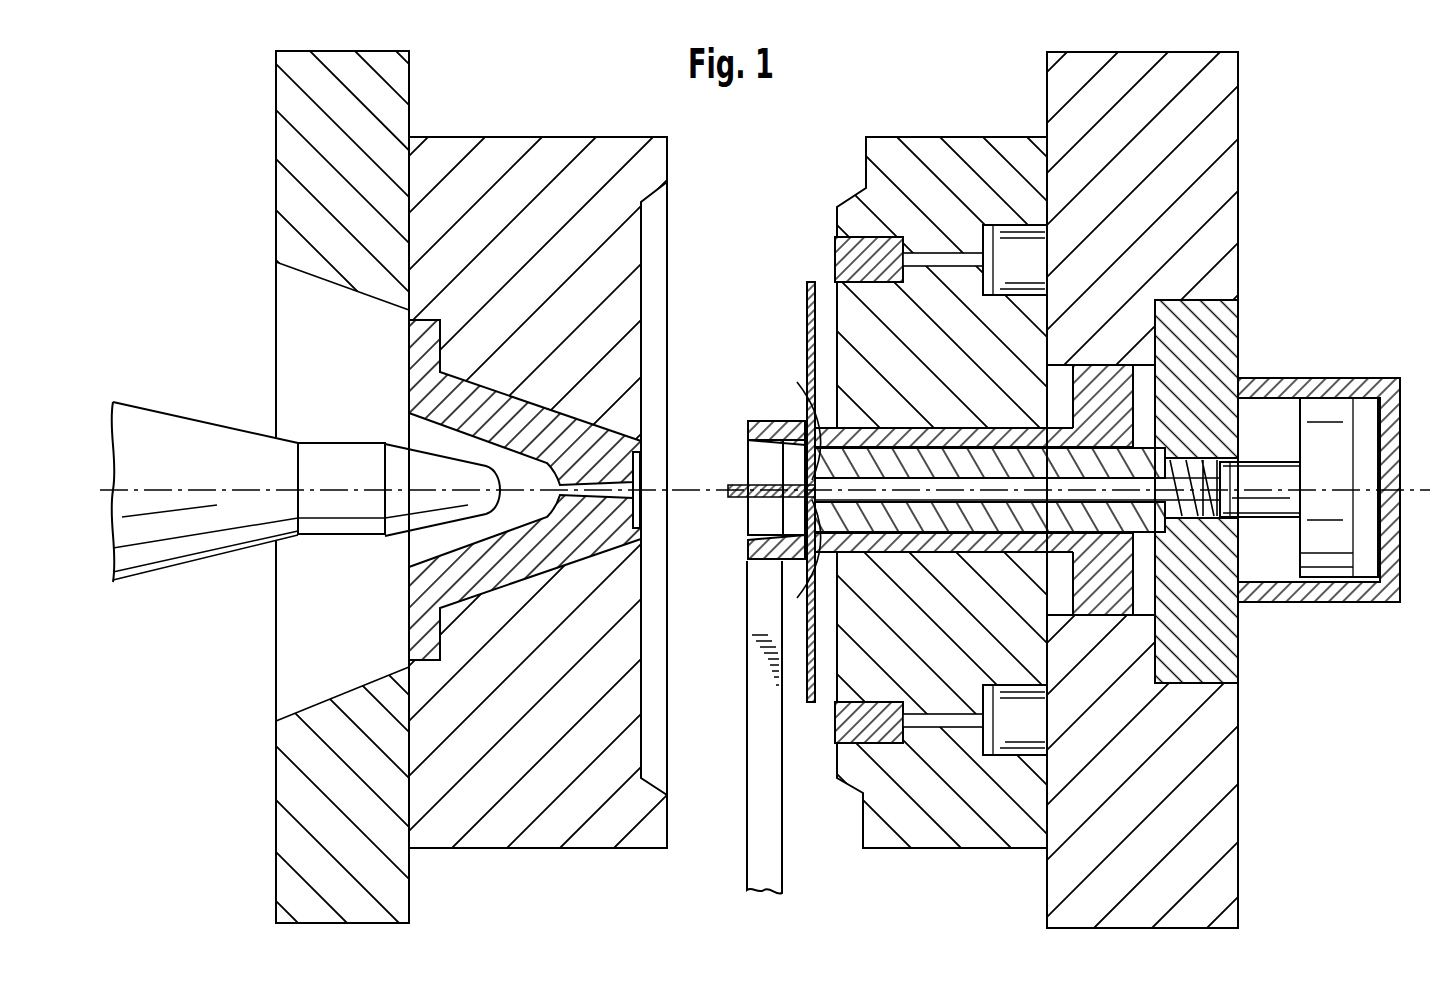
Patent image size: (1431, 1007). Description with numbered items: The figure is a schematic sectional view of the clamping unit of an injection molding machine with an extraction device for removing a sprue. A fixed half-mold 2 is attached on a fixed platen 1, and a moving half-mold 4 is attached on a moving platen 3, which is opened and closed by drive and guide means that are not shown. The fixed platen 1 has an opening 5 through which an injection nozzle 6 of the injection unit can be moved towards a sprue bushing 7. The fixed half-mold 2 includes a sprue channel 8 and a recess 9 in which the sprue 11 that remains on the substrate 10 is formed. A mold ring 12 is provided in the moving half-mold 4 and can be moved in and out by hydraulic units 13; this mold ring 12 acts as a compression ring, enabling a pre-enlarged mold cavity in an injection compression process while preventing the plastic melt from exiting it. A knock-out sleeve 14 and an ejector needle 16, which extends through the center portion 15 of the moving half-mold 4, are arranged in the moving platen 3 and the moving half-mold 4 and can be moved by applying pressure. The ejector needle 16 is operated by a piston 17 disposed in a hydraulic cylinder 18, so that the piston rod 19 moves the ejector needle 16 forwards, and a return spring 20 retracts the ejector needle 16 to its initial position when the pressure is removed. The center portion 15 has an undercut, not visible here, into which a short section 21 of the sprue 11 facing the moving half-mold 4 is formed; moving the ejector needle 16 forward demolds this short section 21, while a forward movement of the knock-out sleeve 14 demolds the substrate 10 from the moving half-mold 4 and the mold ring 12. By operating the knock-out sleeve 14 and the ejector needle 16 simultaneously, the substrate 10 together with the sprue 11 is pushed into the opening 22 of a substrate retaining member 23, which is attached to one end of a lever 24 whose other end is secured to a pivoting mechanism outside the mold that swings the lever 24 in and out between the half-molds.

The fixed platen 1 is at (289, 89).
The fixed half-mold 2 is at (487, 160).
The moving platen 3 is at (1241, 104).
The moving half-mold 4 is at (893, 157).
The opening 5 is at (309, 669).
The injection nozzle 6 is at (157, 425).
The sprue bushing 7 is at (422, 589).
The sprue channel 8 is at (618, 455).
The recess 9 is at (640, 522).
The substrate 10 is at (806, 300).
The sprue 11 is at (757, 478).
The mold ring 12 is at (842, 256).
The hydraulic units 13 is at (1012, 243).
The knock-out sleeve 14 is at (1125, 383).
The center portion 15 is at (950, 462).
The ejector needle 16 is at (933, 488).
The piston 17 is at (1327, 543).
The hydraulic cylinder 18 is at (1370, 380).
The piston rod 19 is at (1260, 507).
The return spring 20 is at (1177, 467).
The short section 21 is at (806, 426).
The opening 22 is at (772, 520).
The substrate retaining member 23 is at (760, 425).
The lever 24 is at (755, 767).